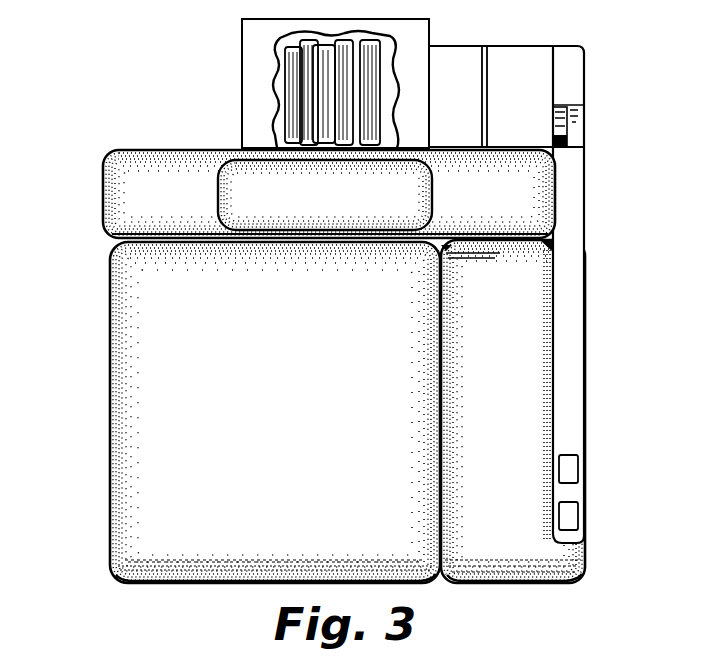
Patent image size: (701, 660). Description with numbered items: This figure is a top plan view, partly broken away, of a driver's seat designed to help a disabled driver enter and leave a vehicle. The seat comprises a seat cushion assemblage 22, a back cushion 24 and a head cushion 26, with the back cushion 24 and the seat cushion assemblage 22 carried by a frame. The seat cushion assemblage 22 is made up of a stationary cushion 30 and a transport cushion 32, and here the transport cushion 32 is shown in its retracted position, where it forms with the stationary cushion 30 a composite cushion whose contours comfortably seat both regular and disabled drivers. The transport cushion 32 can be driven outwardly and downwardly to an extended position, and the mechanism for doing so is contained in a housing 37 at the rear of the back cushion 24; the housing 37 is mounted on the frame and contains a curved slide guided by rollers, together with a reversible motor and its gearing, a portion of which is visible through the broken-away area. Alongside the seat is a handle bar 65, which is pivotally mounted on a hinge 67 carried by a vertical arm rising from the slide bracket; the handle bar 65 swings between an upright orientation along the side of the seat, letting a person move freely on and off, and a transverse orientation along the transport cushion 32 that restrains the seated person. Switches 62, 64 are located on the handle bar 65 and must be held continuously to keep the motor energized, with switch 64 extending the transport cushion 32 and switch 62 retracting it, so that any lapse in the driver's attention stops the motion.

The seat cushion assemblage 22 is at (110, 373).
The back cushion 24 is at (103, 186).
The head cushion 26 is at (218, 194).
The stationary cushion 30 is at (150, 583).
The transport cushion 32 is at (515, 583).
The housing 37 is at (242, 80).
The switch 62 is at (570, 518).
The switch 64 is at (570, 470).
The handle bar 65 is at (553, 334).
The hinge 67 is at (584, 118).